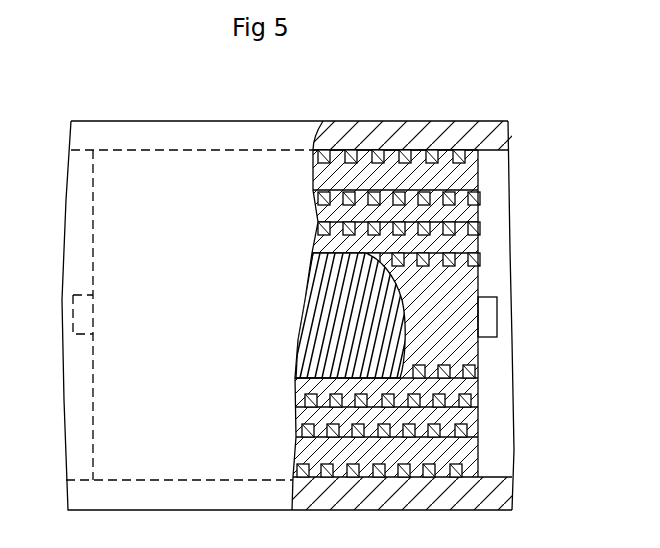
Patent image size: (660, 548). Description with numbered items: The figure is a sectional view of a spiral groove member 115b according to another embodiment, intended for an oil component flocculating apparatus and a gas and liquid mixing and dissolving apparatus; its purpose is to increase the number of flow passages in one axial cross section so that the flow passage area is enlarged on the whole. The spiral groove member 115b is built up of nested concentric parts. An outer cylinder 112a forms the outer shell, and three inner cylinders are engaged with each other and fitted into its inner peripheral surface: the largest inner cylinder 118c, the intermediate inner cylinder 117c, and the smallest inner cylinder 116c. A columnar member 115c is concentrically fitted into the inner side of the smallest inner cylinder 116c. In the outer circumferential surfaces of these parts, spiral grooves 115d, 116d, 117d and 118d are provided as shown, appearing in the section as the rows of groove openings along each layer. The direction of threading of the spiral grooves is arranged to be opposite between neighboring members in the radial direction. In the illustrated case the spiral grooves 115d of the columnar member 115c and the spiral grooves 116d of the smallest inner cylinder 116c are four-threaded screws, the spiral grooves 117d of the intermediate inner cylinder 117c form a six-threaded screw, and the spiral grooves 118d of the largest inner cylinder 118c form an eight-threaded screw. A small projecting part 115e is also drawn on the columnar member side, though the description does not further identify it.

The outer cylinder 112a is at (455, 121).
The spiral groove member 115b is at (590, 150).
The columnar member 115c is at (480, 283).
The spiral grooves 115d is at (480, 263).
The terminal 115e is at (497, 327).
The smallest inner cylinder 116c is at (480, 248).
The spiral grooves 116d is at (480, 232).
The intermediate inner cylinder 117c is at (480, 215).
The spiral grooves 117d is at (480, 197).
The largest inner cylinder 118c is at (480, 178).
The spiral grooves 118d is at (480, 157).